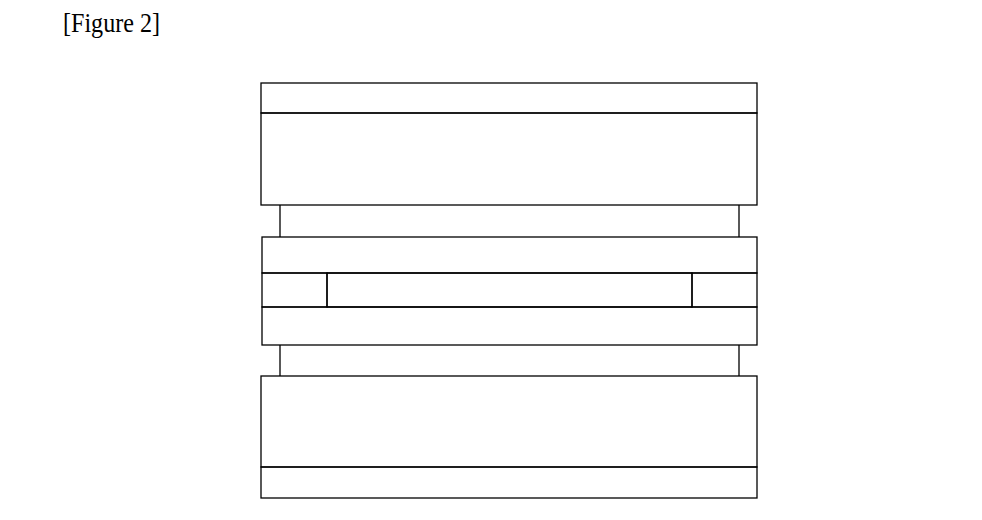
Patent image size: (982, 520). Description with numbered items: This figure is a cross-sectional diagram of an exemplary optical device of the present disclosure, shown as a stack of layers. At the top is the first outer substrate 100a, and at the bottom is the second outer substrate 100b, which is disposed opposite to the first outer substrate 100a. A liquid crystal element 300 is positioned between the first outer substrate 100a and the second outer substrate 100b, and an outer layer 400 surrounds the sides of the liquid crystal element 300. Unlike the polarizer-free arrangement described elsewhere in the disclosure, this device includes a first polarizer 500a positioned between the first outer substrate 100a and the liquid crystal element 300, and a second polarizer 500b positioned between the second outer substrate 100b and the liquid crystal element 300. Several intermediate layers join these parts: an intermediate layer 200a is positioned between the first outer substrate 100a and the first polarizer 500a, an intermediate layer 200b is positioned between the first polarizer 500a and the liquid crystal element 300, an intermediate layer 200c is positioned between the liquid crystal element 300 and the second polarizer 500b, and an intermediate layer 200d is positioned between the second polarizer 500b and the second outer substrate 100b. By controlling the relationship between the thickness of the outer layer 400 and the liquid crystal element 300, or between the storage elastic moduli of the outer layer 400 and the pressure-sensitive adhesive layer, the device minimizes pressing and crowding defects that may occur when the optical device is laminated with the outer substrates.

The first outer substrate 100a is at (758, 92).
The second outer substrate 100b is at (758, 480).
The intermediate layer 200a is at (758, 159).
The intermediate layer 200b is at (758, 252).
The intermediate layer 200c is at (758, 321).
The intermediate layer 200d is at (758, 419).
The liquid crystal element 300 is at (378, 285).
The outer layer 400 is at (280, 288).
The first polarizer 500a is at (740, 221).
The second polarizer 500b is at (740, 357).